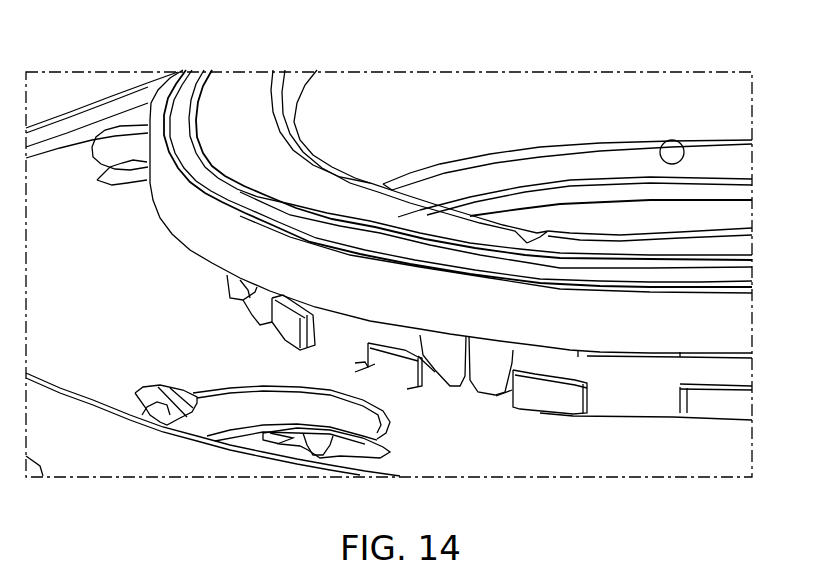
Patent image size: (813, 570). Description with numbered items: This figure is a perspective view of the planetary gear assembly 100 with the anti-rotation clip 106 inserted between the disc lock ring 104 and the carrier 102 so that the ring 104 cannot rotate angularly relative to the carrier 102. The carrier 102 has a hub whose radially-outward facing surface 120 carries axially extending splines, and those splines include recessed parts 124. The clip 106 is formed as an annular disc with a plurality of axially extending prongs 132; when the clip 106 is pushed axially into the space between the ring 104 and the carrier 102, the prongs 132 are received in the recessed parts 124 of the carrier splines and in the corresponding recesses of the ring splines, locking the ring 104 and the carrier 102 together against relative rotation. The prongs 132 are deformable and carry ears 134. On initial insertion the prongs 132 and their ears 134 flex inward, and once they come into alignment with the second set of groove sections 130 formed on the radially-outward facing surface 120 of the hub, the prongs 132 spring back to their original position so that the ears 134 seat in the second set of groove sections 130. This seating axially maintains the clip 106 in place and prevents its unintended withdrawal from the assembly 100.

The planetary gear assembly 100 is at (102, 103).
The carrier 102 is at (375, 455).
The disc lock ring 104 is at (471, 211).
The anti-rotation clip 106 is at (389, 137).
The radially-outward facing surface 120 is at (489, 347).
The recessed parts 124 is at (491, 401).
The second set of groove sections 130 is at (470, 268).
The prongs 132 is at (470, 340).
The ears 134 is at (488, 340).